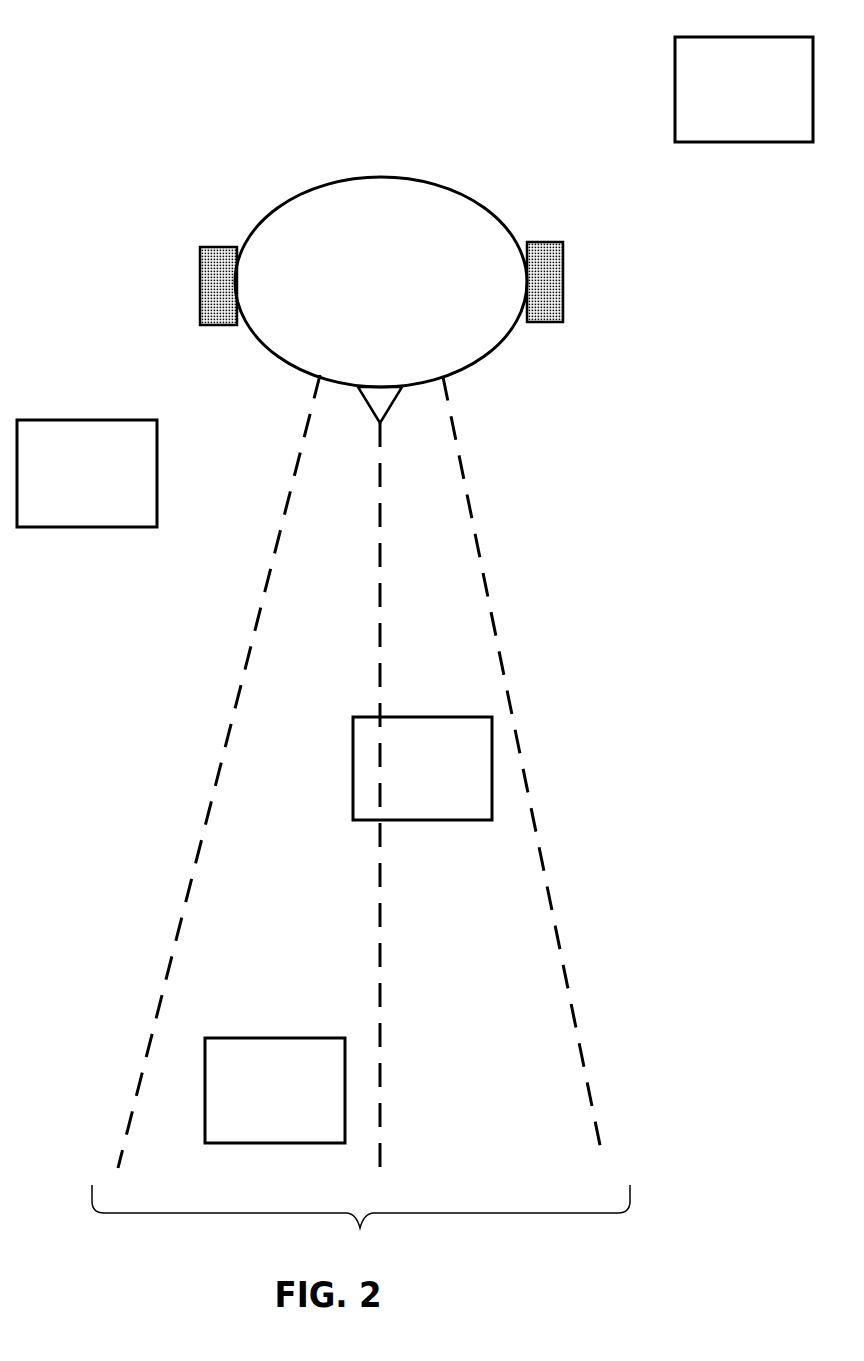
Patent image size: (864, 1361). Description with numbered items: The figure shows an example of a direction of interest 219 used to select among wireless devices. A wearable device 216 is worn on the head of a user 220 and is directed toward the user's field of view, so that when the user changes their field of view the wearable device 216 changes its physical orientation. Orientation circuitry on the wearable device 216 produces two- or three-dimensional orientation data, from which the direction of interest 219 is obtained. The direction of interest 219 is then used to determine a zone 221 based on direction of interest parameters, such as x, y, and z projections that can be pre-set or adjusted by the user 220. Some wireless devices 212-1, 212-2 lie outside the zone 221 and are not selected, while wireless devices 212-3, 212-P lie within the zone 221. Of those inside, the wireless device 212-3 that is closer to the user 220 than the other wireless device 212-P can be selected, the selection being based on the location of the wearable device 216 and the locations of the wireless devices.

The user 220 is at (436, 181).
The wearable device 216 is at (547, 243).
The direction of interest 219 is at (381, 921).
The zone 221 is at (361, 815).
The wireless device 212-1 is at (96, 420).
The wireless device 212-2 is at (694, 37).
The wireless device 212-3 is at (398, 717).
The wireless device 212-P is at (311, 1038).